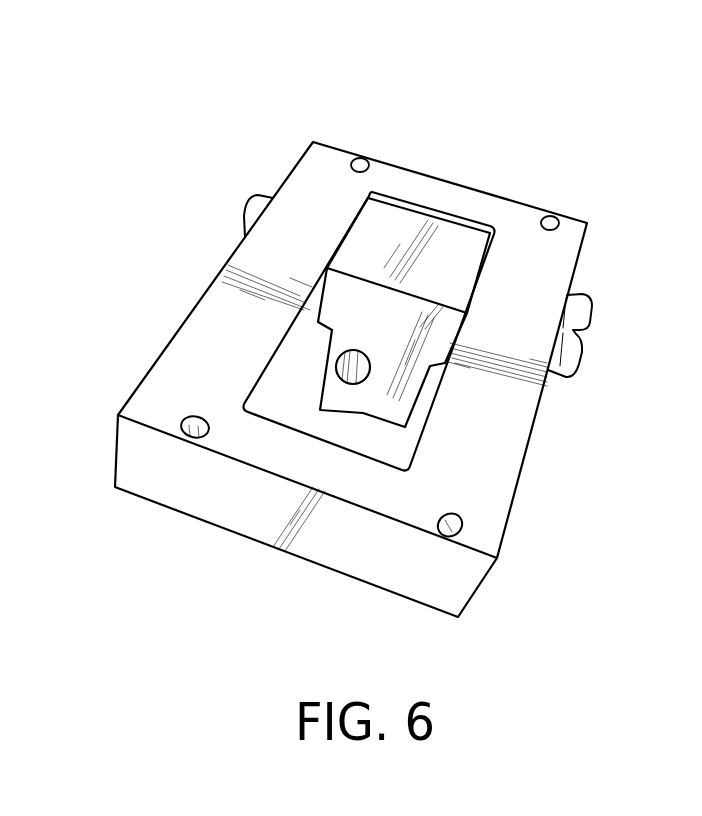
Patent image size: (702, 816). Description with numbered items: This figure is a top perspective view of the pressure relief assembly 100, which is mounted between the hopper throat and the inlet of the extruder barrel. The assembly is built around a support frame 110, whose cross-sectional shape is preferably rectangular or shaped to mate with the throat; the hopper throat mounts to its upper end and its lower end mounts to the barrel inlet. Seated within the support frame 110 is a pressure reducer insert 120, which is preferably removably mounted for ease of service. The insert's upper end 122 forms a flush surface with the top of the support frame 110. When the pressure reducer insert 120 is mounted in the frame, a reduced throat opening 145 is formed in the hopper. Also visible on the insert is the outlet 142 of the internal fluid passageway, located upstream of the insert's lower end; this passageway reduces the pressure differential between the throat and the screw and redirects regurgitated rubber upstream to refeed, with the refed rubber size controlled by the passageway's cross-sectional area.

The pressure relief assembly 100 is at (292, 138).
The support frame 110 is at (492, 480).
The pressure reducer insert 120 is at (457, 229).
The upper end 122 is at (460, 270).
The outlet 142 is at (378, 365).
The reduced throat opening 145 is at (313, 410).